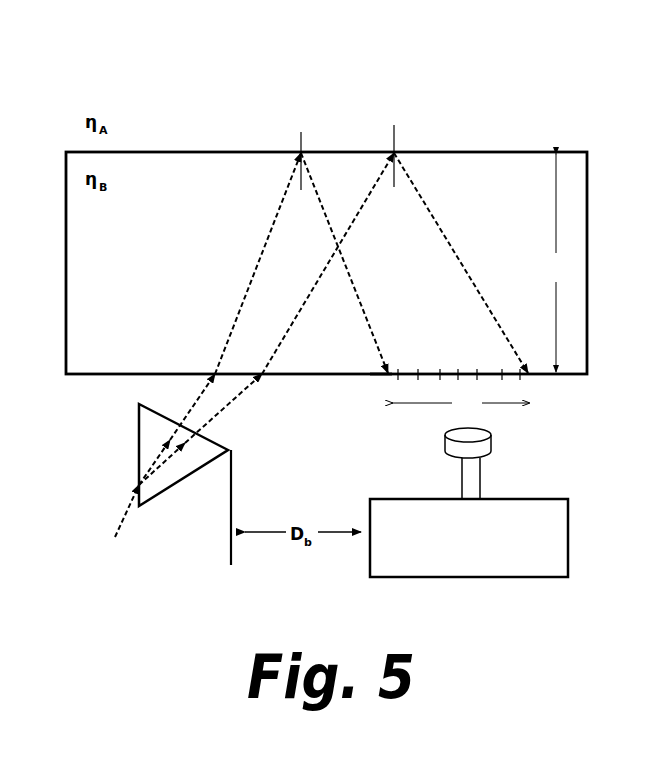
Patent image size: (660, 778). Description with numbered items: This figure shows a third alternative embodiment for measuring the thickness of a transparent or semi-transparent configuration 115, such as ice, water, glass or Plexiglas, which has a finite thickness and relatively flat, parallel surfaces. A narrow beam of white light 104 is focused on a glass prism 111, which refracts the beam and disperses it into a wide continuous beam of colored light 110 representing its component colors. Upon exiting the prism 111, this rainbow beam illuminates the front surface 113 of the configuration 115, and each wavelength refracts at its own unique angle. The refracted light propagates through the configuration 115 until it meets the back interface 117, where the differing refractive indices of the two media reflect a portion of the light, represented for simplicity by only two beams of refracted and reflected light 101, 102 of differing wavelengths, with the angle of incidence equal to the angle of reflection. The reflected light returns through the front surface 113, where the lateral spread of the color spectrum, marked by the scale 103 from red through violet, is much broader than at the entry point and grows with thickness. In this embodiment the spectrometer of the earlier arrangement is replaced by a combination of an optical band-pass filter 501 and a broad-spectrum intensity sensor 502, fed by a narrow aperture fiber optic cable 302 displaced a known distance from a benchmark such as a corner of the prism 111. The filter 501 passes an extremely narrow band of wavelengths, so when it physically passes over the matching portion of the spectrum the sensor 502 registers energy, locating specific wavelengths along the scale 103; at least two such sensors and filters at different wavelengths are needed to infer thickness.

The refracted and reflected light beam 101 is at (285, 170).
The refracted and reflected light beam 102 is at (375, 168).
The scale 103 is at (537, 390).
The narrow beam of white light 104 is at (110, 520).
The refracted light rays 110 is at (215, 376).
The glass prism 111 is at (139, 450).
The front surface 113 is at (373, 375).
The configuration 115 is at (140, 354).
The back surface interface 117 is at (560, 150).
The narrow aperture fiber optic cable 302 is at (483, 467).
The optical band-pass filter 501 is at (492, 441).
The intensity sensor 502 is at (574, 538).